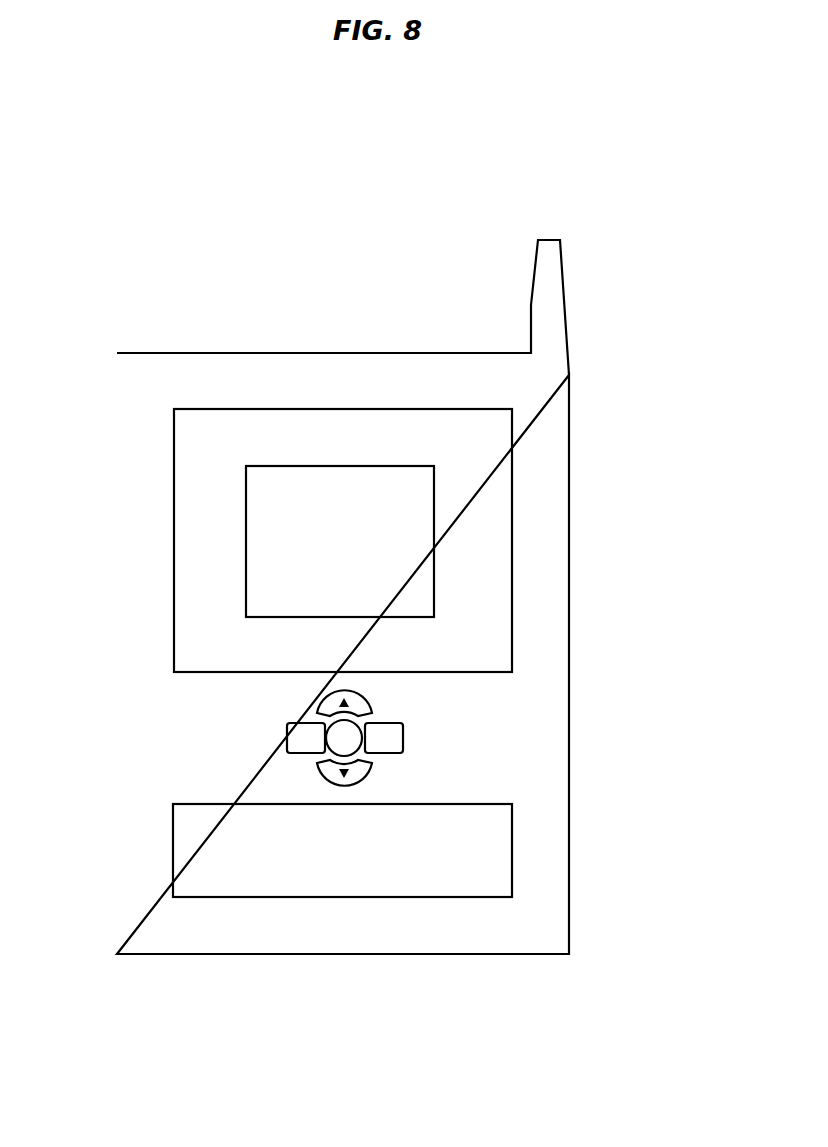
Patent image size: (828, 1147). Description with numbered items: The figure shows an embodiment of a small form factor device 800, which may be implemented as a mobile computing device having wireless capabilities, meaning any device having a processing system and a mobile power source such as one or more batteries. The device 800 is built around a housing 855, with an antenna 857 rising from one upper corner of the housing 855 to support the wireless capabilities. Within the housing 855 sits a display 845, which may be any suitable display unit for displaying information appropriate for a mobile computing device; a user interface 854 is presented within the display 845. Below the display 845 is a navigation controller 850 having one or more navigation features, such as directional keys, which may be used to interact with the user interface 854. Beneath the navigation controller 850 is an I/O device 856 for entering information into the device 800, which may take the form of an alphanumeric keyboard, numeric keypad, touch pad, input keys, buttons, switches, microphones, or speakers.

The small form factor device 800 is at (134, 257).
The antenna 857 is at (534, 290).
The display 845 is at (512, 428).
The user interface 854 is at (434, 557).
The housing 855 is at (569, 653).
The navigation controller 850 is at (427, 729).
The I/O device 856 is at (512, 842).